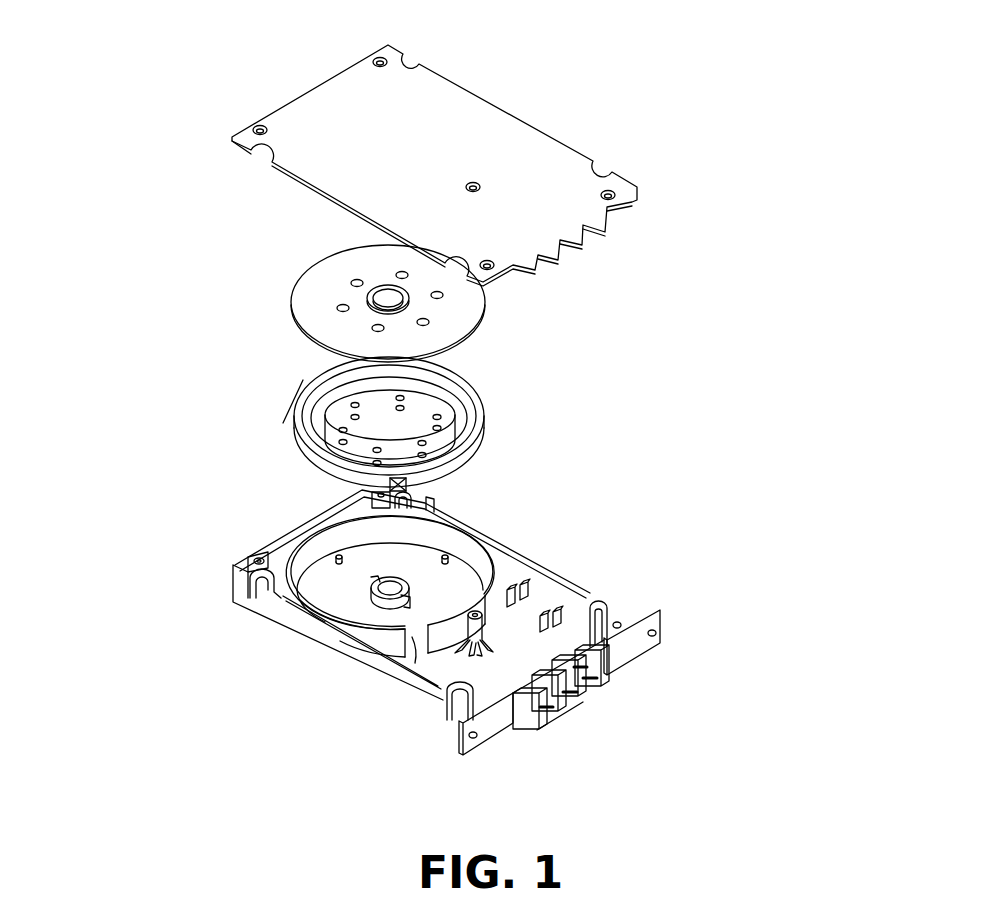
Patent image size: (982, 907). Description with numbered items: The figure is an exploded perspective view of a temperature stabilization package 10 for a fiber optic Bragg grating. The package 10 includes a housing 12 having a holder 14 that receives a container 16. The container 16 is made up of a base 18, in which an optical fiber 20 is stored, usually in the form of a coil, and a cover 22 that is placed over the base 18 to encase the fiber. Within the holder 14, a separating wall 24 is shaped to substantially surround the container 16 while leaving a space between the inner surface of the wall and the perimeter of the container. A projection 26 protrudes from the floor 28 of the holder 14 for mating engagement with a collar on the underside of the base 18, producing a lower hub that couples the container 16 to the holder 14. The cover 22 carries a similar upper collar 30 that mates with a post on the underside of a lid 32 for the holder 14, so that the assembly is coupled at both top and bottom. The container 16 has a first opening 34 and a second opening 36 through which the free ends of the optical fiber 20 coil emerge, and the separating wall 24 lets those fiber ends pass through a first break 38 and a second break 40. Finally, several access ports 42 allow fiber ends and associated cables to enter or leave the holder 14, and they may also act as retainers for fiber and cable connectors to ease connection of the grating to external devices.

The temperature stabilization package 10 is at (712, 250).
The housing 12 is at (270, 655).
The holder 14 is at (407, 688).
The container 16 is at (263, 433).
The base 18 is at (310, 458).
The optical fiber 20 is at (305, 375).
The cover 22 is at (289, 280).
The separating wall 24 is at (378, 638).
The projection 26 is at (375, 592).
The floor 28 is at (448, 665).
The upper collar 30 is at (370, 298).
The lid 32 is at (415, 133).
The first opening 34 is at (487, 438).
The second opening 36 is at (410, 480).
The first break 38 is at (590, 591).
The second break 40 is at (406, 688).
The access ports 42 is at (600, 688).